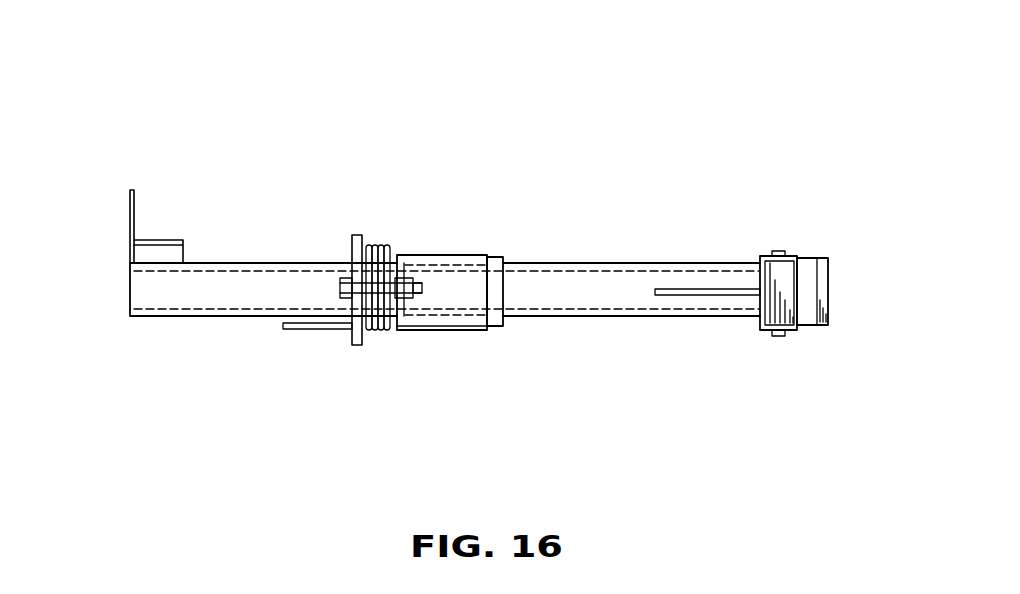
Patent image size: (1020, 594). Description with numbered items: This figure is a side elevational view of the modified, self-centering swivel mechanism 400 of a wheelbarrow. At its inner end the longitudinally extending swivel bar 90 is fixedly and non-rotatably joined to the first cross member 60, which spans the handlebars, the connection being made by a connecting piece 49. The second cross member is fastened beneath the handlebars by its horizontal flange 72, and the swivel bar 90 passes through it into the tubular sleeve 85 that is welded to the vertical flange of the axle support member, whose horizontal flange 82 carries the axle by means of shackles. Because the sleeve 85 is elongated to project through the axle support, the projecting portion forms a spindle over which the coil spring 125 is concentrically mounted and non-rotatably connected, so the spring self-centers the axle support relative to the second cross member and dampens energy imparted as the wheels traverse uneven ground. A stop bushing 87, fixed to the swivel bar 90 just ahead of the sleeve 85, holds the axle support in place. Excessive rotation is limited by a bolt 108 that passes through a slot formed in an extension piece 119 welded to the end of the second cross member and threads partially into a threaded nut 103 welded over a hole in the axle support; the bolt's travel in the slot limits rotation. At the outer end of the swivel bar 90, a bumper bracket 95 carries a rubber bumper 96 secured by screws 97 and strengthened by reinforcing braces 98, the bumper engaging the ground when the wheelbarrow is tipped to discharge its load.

The swivel mechanism 400 is at (414, 190).
The bolt 108 is at (385, 248).
The extension piece 119 is at (352, 262).
The sleeve 85 is at (452, 256).
The stop bushing 87 is at (508, 257).
The swivel bar 90 is at (657, 262).
The bumper bracket 95 is at (762, 256).
The rubber bumper 96 is at (830, 258).
The screws 97 is at (778, 337).
The reinforcing braces 98 is at (713, 297).
The horizontal flange 82 is at (445, 333).
The threaded nut 103 is at (400, 331).
The coil spring 125 is at (380, 333).
The horizontal flange 72 is at (318, 329).
The connecting piece 49 is at (173, 250).
The first cross member 60 is at (133, 203).